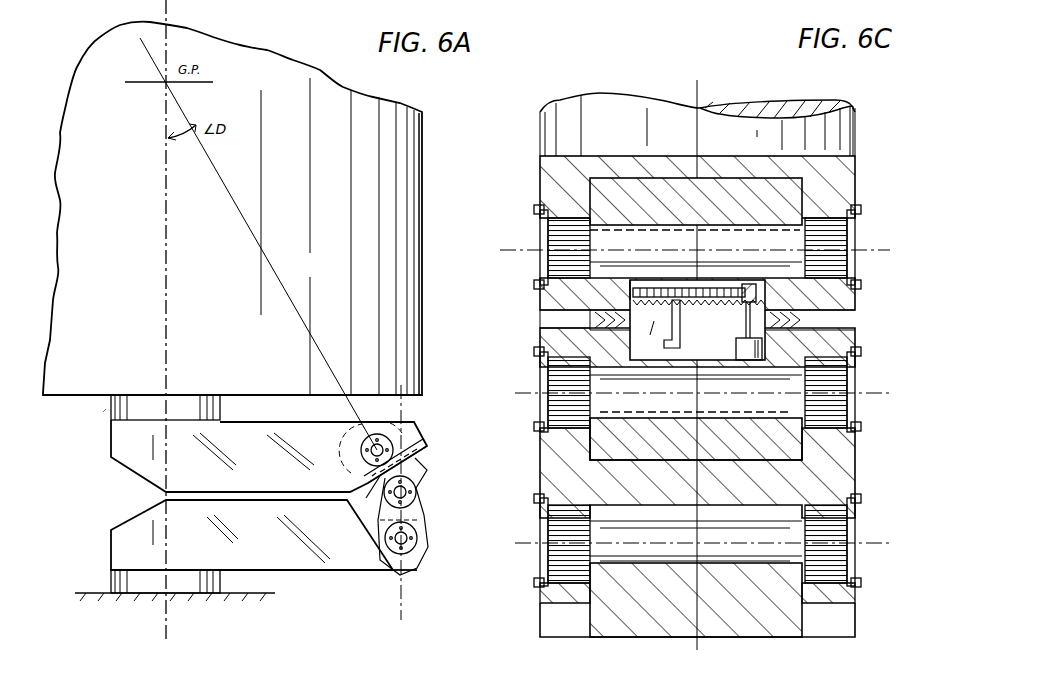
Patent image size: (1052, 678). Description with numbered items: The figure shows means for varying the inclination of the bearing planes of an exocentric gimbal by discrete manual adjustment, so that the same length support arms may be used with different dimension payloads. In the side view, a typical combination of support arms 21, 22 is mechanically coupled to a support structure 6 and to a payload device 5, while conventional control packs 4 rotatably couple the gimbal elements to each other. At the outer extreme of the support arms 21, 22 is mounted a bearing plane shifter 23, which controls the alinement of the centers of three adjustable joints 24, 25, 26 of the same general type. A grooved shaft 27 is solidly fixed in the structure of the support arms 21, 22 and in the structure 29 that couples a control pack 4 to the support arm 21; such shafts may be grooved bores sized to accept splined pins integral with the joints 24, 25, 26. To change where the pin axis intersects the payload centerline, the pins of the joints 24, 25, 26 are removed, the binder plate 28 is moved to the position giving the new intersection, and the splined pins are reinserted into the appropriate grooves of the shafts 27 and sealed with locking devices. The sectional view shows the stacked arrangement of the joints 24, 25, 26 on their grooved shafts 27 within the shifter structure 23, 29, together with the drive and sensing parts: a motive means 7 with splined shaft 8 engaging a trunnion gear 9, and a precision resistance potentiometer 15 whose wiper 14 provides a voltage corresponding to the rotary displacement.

In FIG. 6A, the control pack 4 is at (103, 412).
In FIG. 6C, the control pack 4 is at (616, 292).
In FIG. 6A, the payload device 5 is at (410, 152).
In FIG. 6A, the support structure 6 is at (145, 596).
In FIG. 6C, the motive means 7 is at (745, 350).
In FIG. 6C, the splined shaft 8 is at (770, 300).
In FIG. 6C, the trunnion gear 9 is at (670, 290).
In FIG. 6C, the wiper 14 is at (668, 343).
In FIG. 6C, the precision resistance potentiometer 15 is at (733, 349).
In FIG. 6A, the support arm 21 is at (262, 556).
In FIG. 6A, the support arm 22 is at (130, 458).
In FIG. 6C, the support arm 22 is at (820, 165).
In FIG. 6A, the bearing plane shifter 23 is at (425, 476).
In FIG. 6C, the bearing plane shifter 23 is at (840, 464).
In FIG. 6A, the adjustable joint 24 is at (386, 436).
In FIG. 6C, the adjustable joint 24 is at (857, 243).
In FIG. 6A, the adjustable joint 25 is at (416, 494).
In FIG. 6C, the adjustable joint 25 is at (858, 362).
In FIG. 6A, the adjustable joint 26 is at (417, 540).
In FIG. 6C, the adjustable joint 26 is at (855, 532).
In FIG. 6C, the grooved shaft 27 is at (790, 232).
In FIG. 6A, the binder plate 28 is at (382, 516).
In FIG. 6A, the structure coupling control pack to support arm 29 is at (414, 567).
In FIG. 6C, the structure coupling control pack to support arm 29 is at (780, 628).